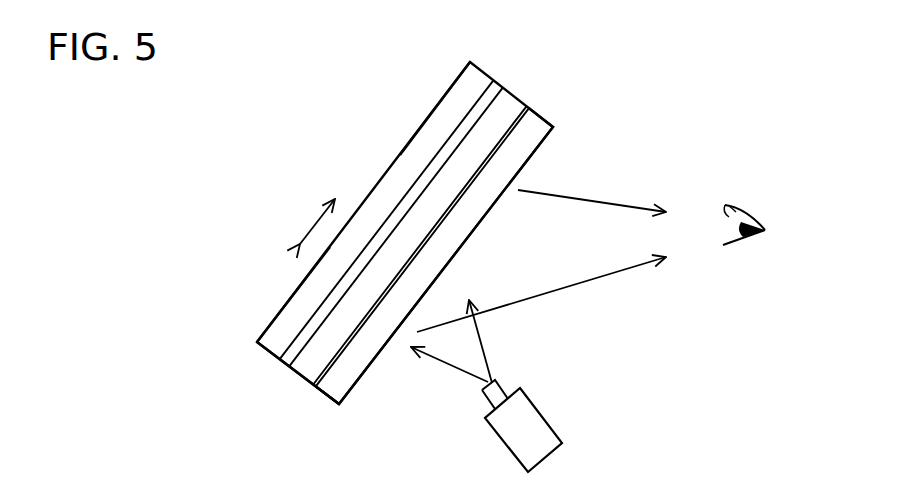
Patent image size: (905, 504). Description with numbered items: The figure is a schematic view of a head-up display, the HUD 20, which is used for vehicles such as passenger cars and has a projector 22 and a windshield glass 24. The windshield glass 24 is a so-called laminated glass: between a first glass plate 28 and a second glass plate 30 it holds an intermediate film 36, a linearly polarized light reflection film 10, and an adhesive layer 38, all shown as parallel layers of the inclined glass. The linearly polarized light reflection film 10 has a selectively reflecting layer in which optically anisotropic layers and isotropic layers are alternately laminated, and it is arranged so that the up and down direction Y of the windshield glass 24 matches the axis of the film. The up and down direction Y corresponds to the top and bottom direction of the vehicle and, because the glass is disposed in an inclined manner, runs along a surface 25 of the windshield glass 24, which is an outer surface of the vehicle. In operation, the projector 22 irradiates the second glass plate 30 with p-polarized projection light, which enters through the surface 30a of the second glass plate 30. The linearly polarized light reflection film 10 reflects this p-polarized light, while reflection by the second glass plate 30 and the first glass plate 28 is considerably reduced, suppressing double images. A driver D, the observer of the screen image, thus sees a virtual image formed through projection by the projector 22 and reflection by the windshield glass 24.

The linearly polarized light reflection film 10 is at (515, 78).
The HUD 20 is at (660, 95).
The projector 22 is at (548, 415).
The windshield glass 24 is at (329, 158).
The surface 25 is at (277, 285).
The first glass plate 28 is at (440, 117).
The second glass plate 30 is at (351, 373).
The surface of the second glass plate 30a is at (346, 399).
The intermediate film 36 is at (438, 165).
The adhesive layer 38 is at (521, 133).
The up and down direction Y is at (314, 221).
The driver D is at (765, 253).